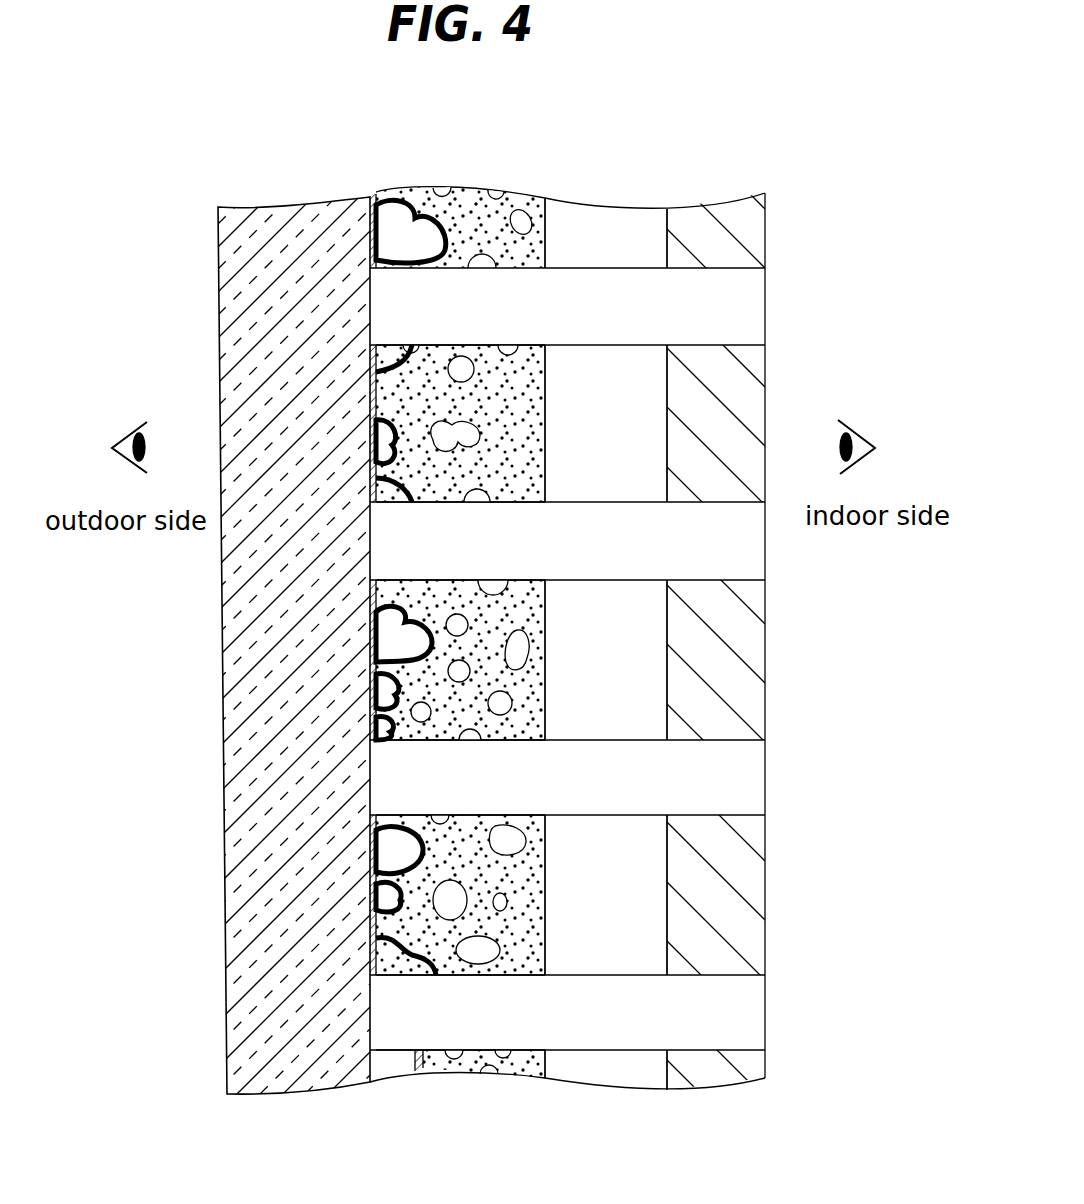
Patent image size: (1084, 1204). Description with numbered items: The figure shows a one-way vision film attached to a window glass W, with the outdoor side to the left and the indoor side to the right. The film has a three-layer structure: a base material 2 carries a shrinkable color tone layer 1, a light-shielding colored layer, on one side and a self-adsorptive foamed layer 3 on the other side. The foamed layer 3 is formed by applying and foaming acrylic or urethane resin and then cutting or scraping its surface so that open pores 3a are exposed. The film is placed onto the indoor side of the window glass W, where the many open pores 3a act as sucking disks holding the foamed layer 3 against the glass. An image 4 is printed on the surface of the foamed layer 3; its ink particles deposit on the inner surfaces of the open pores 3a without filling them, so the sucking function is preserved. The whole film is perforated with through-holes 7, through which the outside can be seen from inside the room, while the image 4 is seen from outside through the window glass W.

The window glass W is at (293, 207).
The image 4 is at (352, 197).
The self-adsorptive foamed layer 3 is at (455, 200).
The open pores 3a is at (373, 245).
The base material 2 is at (597, 228).
The shrinkable color tone layer 1 is at (708, 227).
The through-holes 7 is at (743, 305).